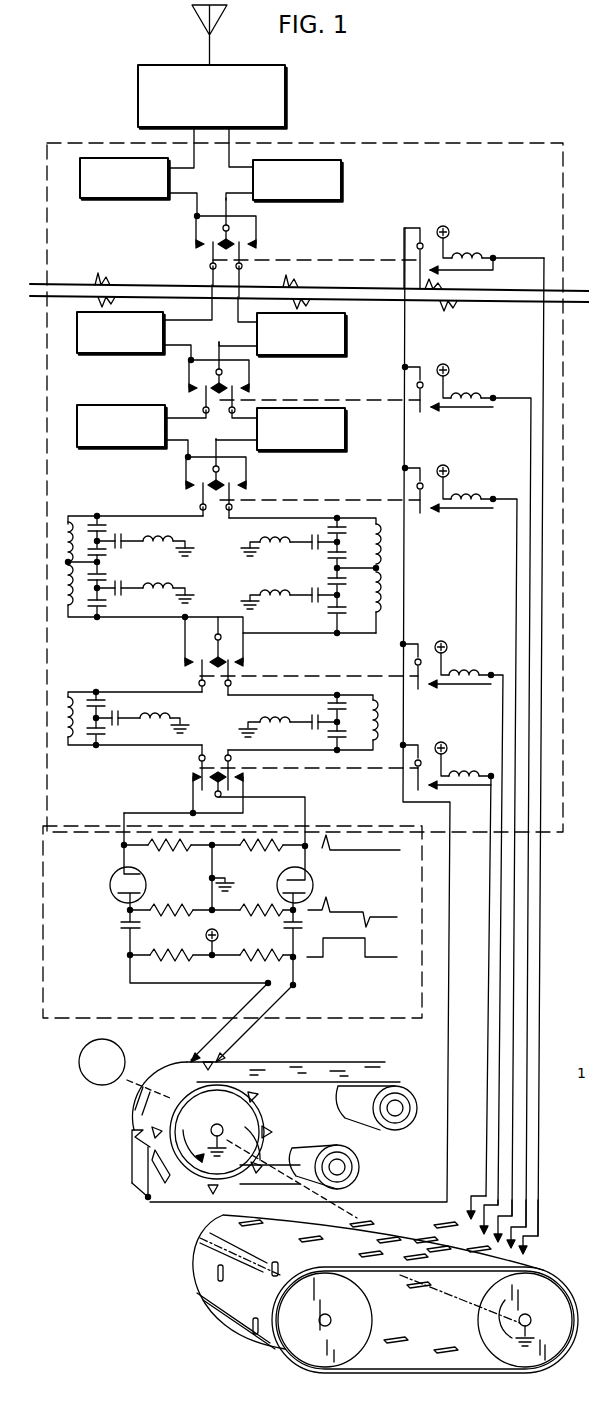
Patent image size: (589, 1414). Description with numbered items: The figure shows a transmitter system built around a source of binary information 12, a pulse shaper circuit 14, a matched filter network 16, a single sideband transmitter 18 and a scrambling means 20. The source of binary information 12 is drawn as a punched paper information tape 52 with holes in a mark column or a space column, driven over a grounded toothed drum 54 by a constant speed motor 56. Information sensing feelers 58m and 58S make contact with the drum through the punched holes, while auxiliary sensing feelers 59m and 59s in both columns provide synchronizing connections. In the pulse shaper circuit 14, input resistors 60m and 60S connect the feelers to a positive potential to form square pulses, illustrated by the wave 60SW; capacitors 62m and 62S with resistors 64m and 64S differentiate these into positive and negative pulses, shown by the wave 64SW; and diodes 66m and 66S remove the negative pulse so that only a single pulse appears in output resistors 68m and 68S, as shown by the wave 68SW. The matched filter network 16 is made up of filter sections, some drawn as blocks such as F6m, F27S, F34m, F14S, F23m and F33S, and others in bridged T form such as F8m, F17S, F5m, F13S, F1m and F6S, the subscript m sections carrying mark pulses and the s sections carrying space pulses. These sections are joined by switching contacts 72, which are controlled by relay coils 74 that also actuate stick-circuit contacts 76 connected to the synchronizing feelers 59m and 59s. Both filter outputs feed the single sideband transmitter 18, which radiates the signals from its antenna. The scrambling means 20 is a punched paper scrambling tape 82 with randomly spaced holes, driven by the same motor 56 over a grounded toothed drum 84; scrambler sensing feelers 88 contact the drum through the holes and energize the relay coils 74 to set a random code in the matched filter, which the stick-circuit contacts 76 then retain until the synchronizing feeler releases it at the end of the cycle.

The single sideband transmitter 18 is at (286, 108).
The stick-circuit contacts 76 is at (415, 247).
The relay coils 74 is at (467, 256).
The switching contacts 72 is at (214, 595).
The matched filter network 16 is at (470, 550).
The pulse shaper circuit 14 is at (232, 915).
The diode 66m is at (112, 876).
The output resistor 68m is at (168, 857).
The resistor 64m is at (171, 903).
The capacitor 62m is at (121, 925).
The input resistor 60m is at (174, 945).
The diode 66S is at (313, 864).
The output resistor 68S is at (258, 857).
The resistor 64S is at (254, 903).
The capacitor 62S is at (311, 947).
The input resistor 60S is at (252, 948).
The output wave 68SW is at (368, 850).
The differentiated wave 64SW is at (358, 911).
The square wave 60SW is at (385, 960).
The constant speed motor 56 is at (79, 1063).
The information sensing feeler 58m is at (212, 1021).
The information sensing feeler 58S is at (256, 1022).
The punched paper information tape 52 is at (330, 1065).
The source of binary information 12 is at (243, 1136).
The grounded toothed drum 54 is at (258, 1146).
The auxiliary sensing feeler 59m is at (131, 1155).
The auxiliary sensing feeler 59s is at (145, 1197).
The scrambler sensing feelers 88 is at (541, 1217).
The grounded toothed drum 84 is at (537, 1290).
The punched paper scrambling tape 82 is at (205, 1272).
The scrambling means 20 is at (391, 1299).
The filter section F6m is at (125, 179).
The filter section F27S is at (298, 181).
The filter section F34m is at (121, 333).
The filter section F14S is at (302, 335).
The filter section F23m is at (122, 427).
The filter section F33S is at (302, 430).
The filter section F8m is at (220, 562).
The filter section F17S is at (305, 567).
The filter section F5m is at (100, 635).
The filter section F13S is at (339, 656).
The filter section F1m is at (135, 709).
The filter section F6S is at (303, 715).